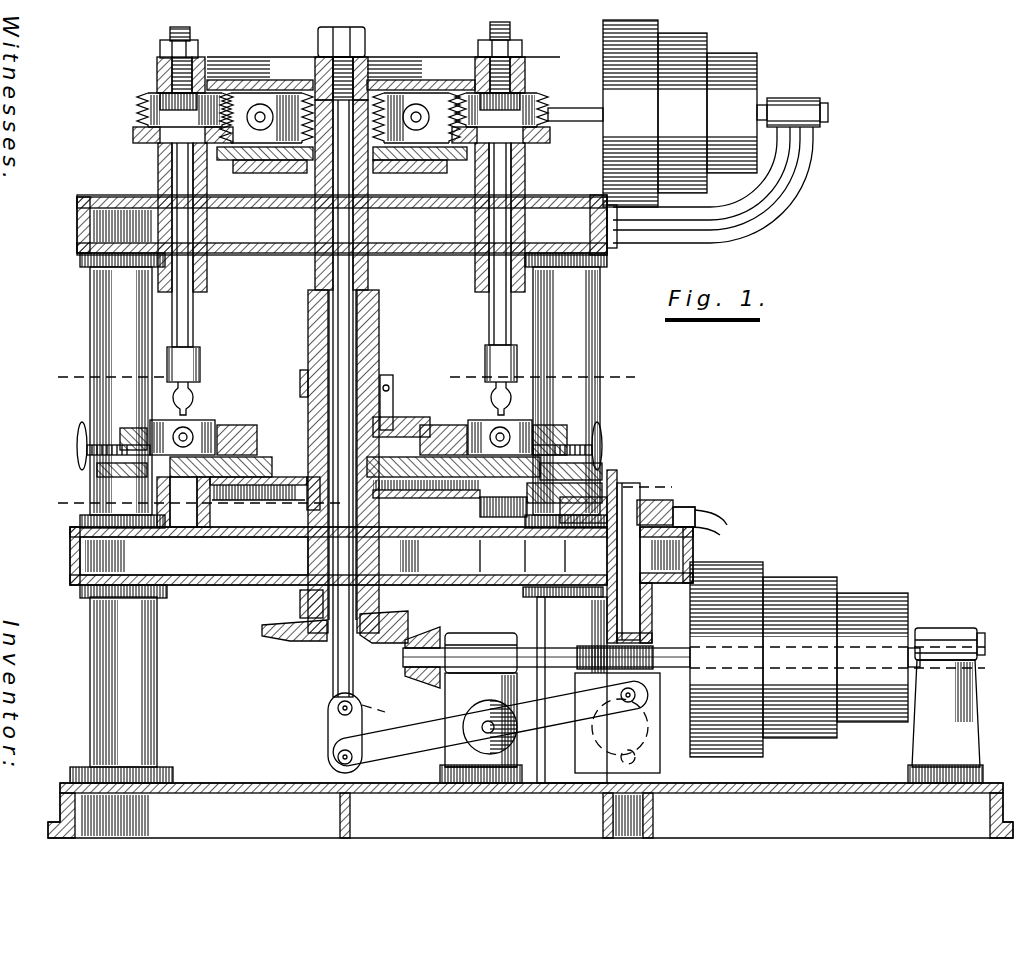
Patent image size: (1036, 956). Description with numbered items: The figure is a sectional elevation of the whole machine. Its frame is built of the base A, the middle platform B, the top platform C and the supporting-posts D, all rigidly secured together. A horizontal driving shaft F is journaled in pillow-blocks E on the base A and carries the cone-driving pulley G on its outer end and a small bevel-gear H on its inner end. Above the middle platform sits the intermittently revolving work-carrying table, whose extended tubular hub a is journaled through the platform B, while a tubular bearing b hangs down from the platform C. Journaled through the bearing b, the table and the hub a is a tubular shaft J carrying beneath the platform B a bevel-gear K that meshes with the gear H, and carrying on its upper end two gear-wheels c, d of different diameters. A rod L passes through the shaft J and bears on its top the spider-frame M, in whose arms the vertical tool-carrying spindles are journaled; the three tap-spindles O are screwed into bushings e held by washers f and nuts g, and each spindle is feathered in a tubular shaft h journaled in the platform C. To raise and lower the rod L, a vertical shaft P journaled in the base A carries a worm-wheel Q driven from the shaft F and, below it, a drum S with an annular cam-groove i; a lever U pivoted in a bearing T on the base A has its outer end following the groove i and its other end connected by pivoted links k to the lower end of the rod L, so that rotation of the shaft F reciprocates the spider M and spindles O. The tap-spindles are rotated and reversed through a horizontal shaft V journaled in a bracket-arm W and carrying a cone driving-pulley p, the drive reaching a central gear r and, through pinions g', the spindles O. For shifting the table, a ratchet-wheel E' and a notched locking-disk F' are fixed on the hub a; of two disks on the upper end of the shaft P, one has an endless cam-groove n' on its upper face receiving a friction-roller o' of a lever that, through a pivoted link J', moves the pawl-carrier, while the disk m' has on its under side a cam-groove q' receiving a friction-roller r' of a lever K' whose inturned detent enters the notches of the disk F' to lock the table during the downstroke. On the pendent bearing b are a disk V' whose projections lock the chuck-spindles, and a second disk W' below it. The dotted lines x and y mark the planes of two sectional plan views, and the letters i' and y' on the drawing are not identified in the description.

The base A is at (1013, 770).
The middle platform B is at (338, 556).
The top platform C is at (347, 225).
The supporting-posts D is at (103, 303).
The pillow-blocks E is at (712, 705).
The ratchet-wheel E' is at (487, 502).
The horizontal shaft F is at (238, 502).
The locking-disk F' is at (546, 664).
The cone-driving pulley G is at (837, 659).
The bevel-gear H is at (410, 675).
The tubular shaft J is at (474, 433).
The pivoted link J' is at (563, 556).
The bevel-gear K is at (349, 616).
The lever K' is at (531, 556).
The rod or shaft L is at (333, 657).
The spider-frame M is at (407, 68).
The tap-spindles O is at (197, 330).
The vertical shaft P is at (640, 628).
The worm-wheel Q is at (652, 648).
The drum S is at (617, 723).
The bearing T is at (481, 758).
The lever U is at (463, 727).
The horizontal shaft V is at (575, 100).
The disk V' is at (341, 415).
The bracket-arm W is at (713, 190).
The second disk W' is at (349, 467).
The tubular hub a is at (300, 595).
The tubular bearing b is at (380, 350).
The gear-wheel c is at (228, 160).
The gear-wheel d is at (280, 173).
The bushing e is at (157, 68).
The washers f is at (205, 62).
The nuts g is at (353, 34).
The pinion g' is at (347, 89).
The tubular shaft h is at (160, 168).
The annular cam-groove i is at (667, 734).
The block i' is at (656, 490).
The pivoted links k is at (332, 722).
The disk m' is at (702, 511).
The endless cam-groove n' is at (696, 491).
The friction-roller o' is at (598, 490).
The cone driving-pulley p is at (715, 113).
The endless cam-groove q' is at (708, 525).
The central gear r is at (325, 141).
The friction-roller r' is at (647, 492).
The section line xx x is at (350, 376).
The section line yy y is at (185, 500).
The block y' is at (681, 499).